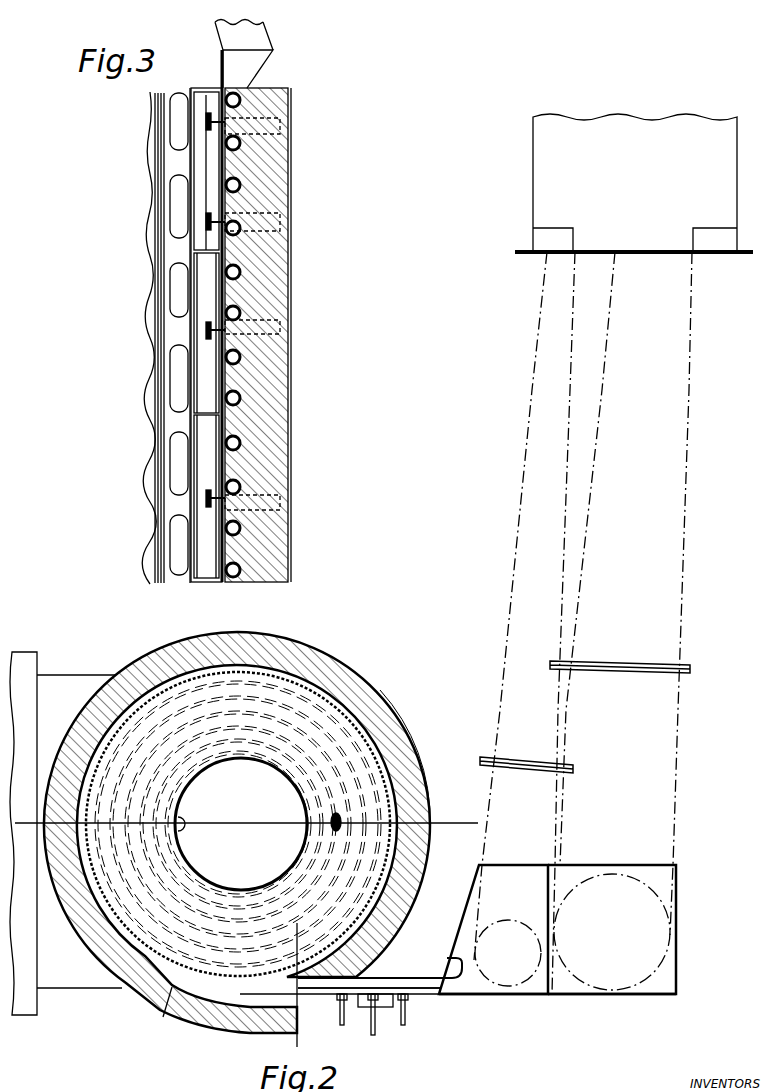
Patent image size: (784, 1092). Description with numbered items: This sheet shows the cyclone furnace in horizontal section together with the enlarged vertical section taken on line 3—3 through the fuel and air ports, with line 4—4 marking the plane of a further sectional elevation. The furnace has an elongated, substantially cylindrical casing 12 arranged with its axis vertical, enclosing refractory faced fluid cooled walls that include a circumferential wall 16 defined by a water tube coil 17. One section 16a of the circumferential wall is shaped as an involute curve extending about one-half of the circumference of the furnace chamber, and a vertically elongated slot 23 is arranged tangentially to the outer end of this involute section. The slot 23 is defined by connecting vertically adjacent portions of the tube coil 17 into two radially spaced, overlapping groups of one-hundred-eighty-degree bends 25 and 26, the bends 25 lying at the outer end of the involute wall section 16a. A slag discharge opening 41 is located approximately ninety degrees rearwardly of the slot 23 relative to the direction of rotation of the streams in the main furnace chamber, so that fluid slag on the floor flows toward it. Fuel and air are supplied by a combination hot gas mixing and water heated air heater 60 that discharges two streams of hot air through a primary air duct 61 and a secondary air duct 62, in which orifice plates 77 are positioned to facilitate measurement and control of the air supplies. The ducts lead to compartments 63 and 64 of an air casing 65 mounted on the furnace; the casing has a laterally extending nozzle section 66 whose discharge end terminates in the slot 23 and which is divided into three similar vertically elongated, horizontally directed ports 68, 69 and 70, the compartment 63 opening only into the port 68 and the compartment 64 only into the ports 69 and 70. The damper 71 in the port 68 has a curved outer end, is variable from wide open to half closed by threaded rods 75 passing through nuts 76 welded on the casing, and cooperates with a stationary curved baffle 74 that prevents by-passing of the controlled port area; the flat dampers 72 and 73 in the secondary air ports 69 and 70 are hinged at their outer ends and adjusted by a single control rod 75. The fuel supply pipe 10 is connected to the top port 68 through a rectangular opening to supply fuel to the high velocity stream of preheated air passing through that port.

In FIG. 3, the fuel supply pipe 10 is at (273, 47).
In FIG. 2, the fuel supply pipe 10 is at (383, 1010).
In FIG. 3, the casing 12 is at (292, 520).
In FIG. 2, the casing 12 is at (407, 716).
In FIG. 2, the circumferential wall 16 is at (358, 683).
In FIG. 2, the involute curved wall section 16a is at (135, 997).
In FIG. 2, the water tube coil 17 is at (167, 1003).
In FIG. 3, the slot 23 is at (263, 553).
In FIG. 2, the slot 23 is at (295, 992).
In FIG. 3, the 180° bends 25 is at (240, 403).
In FIG. 2, the 180° bends 25 is at (322, 1010).
In FIG. 3, the 180° bends 26 is at (173, 382).
In FIG. 2, the 180° bends 26 is at (312, 958).
In FIG. 2, the slag discharge opening 41 is at (298, 811).
In FIG. 2, the air heater 60 is at (542, 162).
In FIG. 2, the primary air duct 61 is at (520, 507).
In FIG. 2, the secondary air duct 62 is at (688, 482).
In FIG. 2, the compartment 63 is at (522, 903).
In FIG. 2, the compartment 64 is at (626, 915).
In FIG. 2, the air casing 65 is at (567, 995).
In FIG. 2, the nozzle section 66 is at (404, 977).
In FIG. 3, the port 68 is at (197, 163).
In FIG. 3, the port 69 is at (203, 347).
In FIG. 3, the port 70 is at (207, 513).
In FIG. 3, the damper 71 is at (227, 202).
In FIG. 2, the damper 71 is at (350, 1003).
In FIG. 3, the damper 72 is at (207, 298).
In FIG. 3, the damper 73 is at (197, 472).
In FIG. 2, the stationary curved baffle 74 is at (466, 963).
In FIG. 3, the threaded rods 75 is at (292, 127).
In FIG. 2, the threaded rods 75 is at (408, 1020).
In FIG. 3, the nuts 76 is at (292, 317).
In FIG. 2, the nuts 76 is at (410, 997).
In FIG. 2, the orifice plates 77 is at (603, 660).
In FIG. 2, the section line 3— 3 is at (296, 925).
In FIG. 2, the section line 4— 4 is at (22, 822).